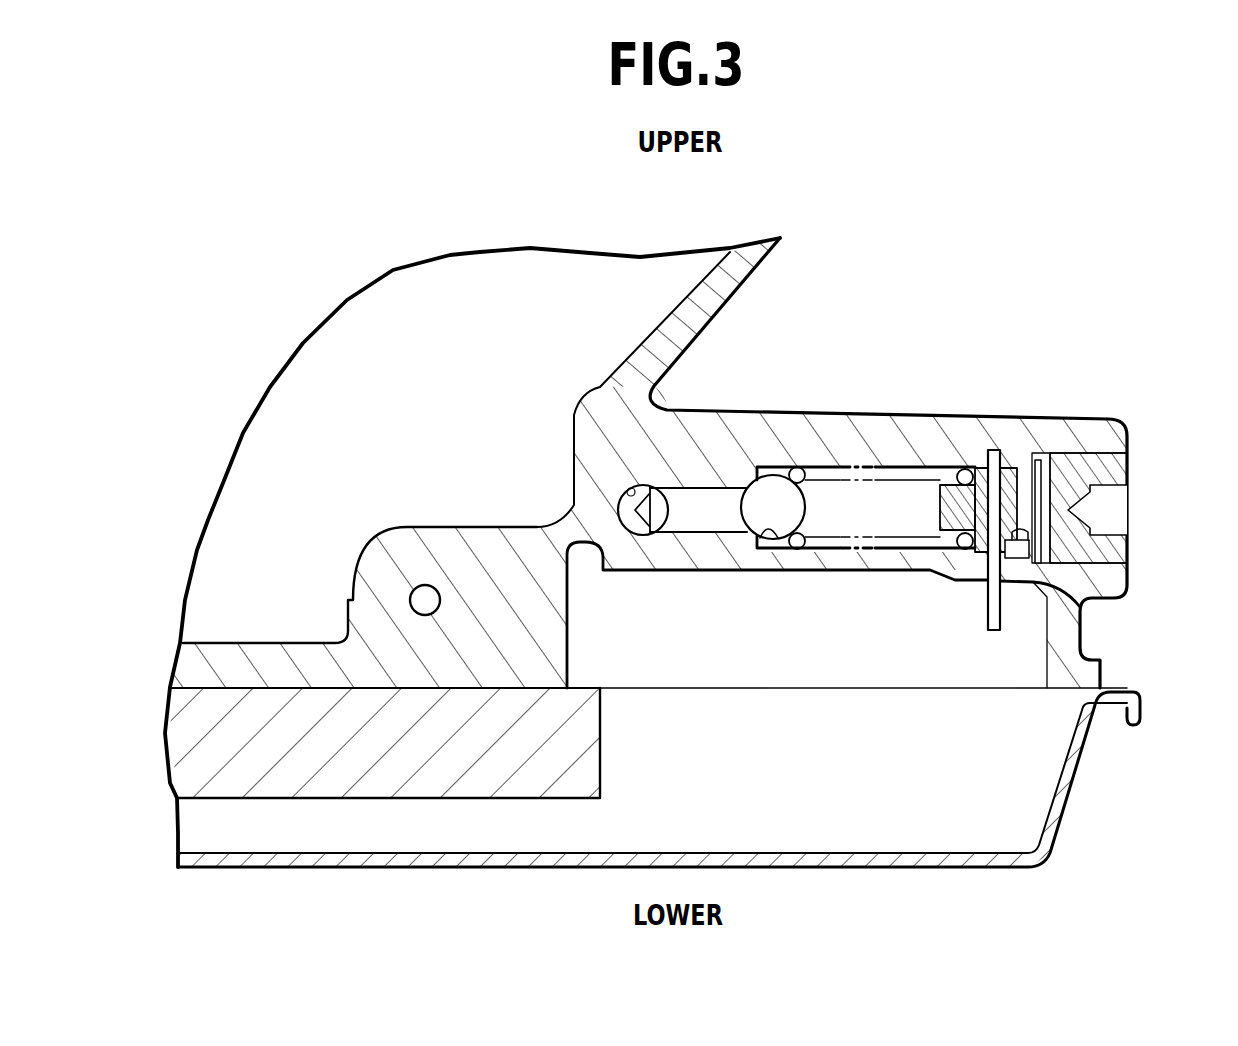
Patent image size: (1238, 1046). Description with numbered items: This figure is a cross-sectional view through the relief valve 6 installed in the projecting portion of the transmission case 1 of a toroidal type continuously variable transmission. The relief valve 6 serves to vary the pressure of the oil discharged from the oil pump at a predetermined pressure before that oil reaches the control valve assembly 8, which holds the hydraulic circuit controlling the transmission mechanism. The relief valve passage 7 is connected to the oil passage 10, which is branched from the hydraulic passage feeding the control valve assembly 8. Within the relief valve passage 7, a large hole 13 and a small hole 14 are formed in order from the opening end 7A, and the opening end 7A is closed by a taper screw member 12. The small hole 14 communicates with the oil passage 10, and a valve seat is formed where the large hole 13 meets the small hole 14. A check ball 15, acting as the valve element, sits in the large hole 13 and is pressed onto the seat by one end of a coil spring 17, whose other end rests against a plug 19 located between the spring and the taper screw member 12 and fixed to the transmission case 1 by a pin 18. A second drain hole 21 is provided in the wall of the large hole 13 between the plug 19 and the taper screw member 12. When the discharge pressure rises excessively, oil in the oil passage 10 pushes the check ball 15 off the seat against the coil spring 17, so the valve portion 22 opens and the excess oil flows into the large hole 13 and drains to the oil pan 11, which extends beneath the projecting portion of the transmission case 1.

The transmission case 1 is at (769, 408).
The relief valve 6 is at (1015, 442).
The relief valve passage 7 is at (905, 497).
The opening end 7A is at (1128, 467).
The control valve assembly 8 is at (600, 760).
The oil passage 10 is at (627, 465).
The oil pan 11 is at (1068, 813).
The taper screw member 12 is at (1117, 473).
The large hole 13 is at (890, 470).
The small hole 14 is at (706, 500).
The check ball 15 is at (773, 487).
The coil spring 17 is at (822, 467).
The pin 18 is at (1000, 612).
The plug 19 is at (950, 480).
The second drain hole 21 is at (1023, 568).
The valve portion 22 is at (723, 533).